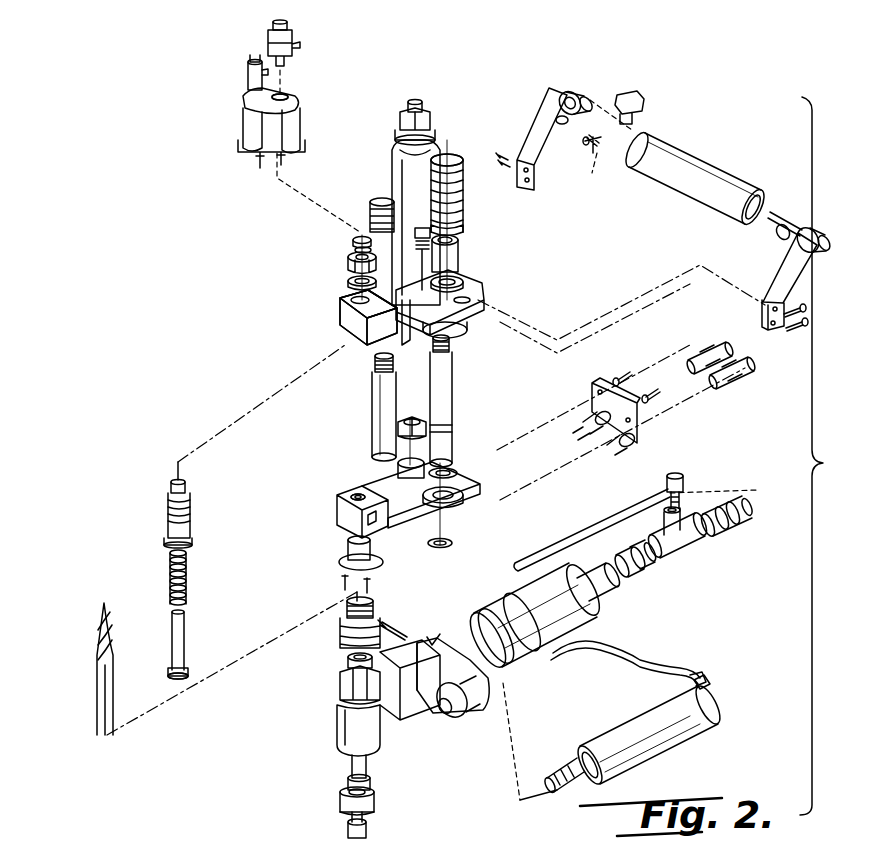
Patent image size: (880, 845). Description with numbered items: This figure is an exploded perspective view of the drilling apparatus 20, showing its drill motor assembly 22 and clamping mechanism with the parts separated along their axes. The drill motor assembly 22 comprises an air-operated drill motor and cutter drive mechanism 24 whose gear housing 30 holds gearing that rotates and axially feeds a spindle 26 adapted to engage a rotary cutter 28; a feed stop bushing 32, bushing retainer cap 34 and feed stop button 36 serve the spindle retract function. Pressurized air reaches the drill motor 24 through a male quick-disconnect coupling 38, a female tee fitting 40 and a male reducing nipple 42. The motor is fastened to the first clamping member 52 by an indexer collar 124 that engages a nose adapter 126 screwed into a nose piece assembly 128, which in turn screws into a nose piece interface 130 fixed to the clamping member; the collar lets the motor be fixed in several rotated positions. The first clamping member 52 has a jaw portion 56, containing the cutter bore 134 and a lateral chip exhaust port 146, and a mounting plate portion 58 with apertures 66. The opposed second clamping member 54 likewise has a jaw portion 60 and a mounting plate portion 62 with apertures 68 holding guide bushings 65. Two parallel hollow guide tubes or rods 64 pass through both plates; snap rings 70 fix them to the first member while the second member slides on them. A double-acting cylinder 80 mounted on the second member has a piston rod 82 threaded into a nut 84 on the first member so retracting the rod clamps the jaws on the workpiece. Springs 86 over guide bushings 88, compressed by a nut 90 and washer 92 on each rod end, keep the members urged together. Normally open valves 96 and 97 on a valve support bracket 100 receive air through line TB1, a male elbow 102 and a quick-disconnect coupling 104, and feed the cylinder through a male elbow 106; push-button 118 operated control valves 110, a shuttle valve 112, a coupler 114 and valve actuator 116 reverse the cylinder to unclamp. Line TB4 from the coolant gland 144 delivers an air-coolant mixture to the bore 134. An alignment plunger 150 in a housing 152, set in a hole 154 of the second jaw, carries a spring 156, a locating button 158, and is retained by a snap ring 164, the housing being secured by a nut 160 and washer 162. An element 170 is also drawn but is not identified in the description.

The drilling apparatus 20 is at (832, 456).
The drill motor assembly 22 is at (531, 642).
The drill motor and cutter drive mechanism 24 is at (335, 723).
The spindle 26 is at (350, 765).
The rotary cutter 28 is at (98, 640).
The gear housing 30 is at (374, 722).
The feed stop bushing 32 is at (348, 783).
The bushing retainer cap 34 is at (345, 805).
The feed stop button 36 is at (368, 828).
The male quick-disconnect coupling 38 is at (733, 515).
The female tee fitting 40 is at (688, 548).
The male reducing nipple 42 is at (643, 573).
The first clamping member 52 is at (335, 502).
The second clamping member 54 is at (350, 338).
The jaw portion 56 is at (358, 491).
The mounting plate portion 58 is at (445, 515).
The jaw portion 60 is at (342, 325).
The mounting plate portion 62 is at (465, 325).
The guide tubes or rods 64 is at (397, 402).
The guide bushings 65 is at (484, 295).
The apertures 66 is at (455, 498).
The apertures 68 is at (478, 272).
The snap rings 70 is at (457, 476).
The fluid-operated cylinder 80 is at (395, 165).
The piston rod 82 is at (405, 322).
The nut 84 is at (412, 428).
The springs 86 is at (360, 238).
The guide bushings 88 is at (477, 243).
The nut 90 is at (380, 210).
The washer 92 is at (463, 183).
The normally open fluid-actuated valve 96 is at (246, 78).
The normally open fluid-actuated valve 97 is at (268, 50).
The valve support bracket 100 is at (290, 97).
The male elbow 102 is at (688, 492).
The quick-disconnect coupling 104 is at (700, 358).
The male elbow 106 is at (418, 226).
The control valves 110 is at (580, 88).
The shuttle valve 112 is at (638, 100).
The coupler 114 is at (438, 118).
The valve actuator 116 is at (245, 104).
The push button 118 is at (545, 92).
The indexer collar 124 is at (345, 690).
The nose adapter 126 is at (347, 663).
The nose piece assembly 128 is at (350, 637).
The nose piece interface 130 is at (350, 557).
The bore 134 is at (357, 488).
The coolant gland 144 is at (438, 0).
The chip exhaust port 146 is at (376, 520).
The spring-loaded plunger 150 is at (186, 634).
The housing 152 is at (170, 524).
The hole 154 is at (342, 315).
The spring 156 is at (172, 568).
The button 158 is at (182, 678).
The nut 160 is at (350, 268).
The washer 162 is at (350, 286).
The snap ring 164 is at (358, 248).
The roller 170 is at (682, 165).
The line TB1 is at (598, 545).
The line TB4 is at (673, 658).